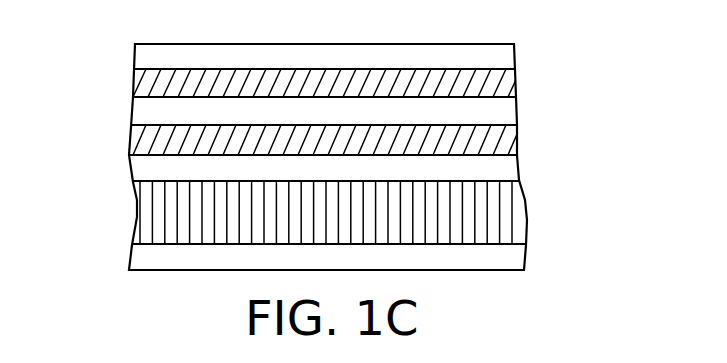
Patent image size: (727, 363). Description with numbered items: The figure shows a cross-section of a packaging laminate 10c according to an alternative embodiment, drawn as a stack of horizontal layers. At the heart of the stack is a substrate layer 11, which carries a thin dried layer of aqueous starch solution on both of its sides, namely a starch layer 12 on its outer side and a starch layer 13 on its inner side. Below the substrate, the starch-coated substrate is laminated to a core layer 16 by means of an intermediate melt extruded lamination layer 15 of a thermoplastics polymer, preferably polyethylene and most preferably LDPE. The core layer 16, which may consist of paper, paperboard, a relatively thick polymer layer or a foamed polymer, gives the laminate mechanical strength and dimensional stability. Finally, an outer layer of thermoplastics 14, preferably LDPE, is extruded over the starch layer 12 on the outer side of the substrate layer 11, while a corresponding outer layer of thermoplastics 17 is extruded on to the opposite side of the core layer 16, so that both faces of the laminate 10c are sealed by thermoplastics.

The packaging laminate 10c is at (280, 157).
The substrate layer 11 is at (495, 113).
The starch layer 12 is at (495, 82).
The starch layer 13 is at (495, 138).
The outer layer of thermoplastics 14 is at (495, 55).
The lamination layer 15 is at (495, 167).
The core layer 16 is at (495, 209).
The outer layer of thermoplastics 17 is at (495, 255).